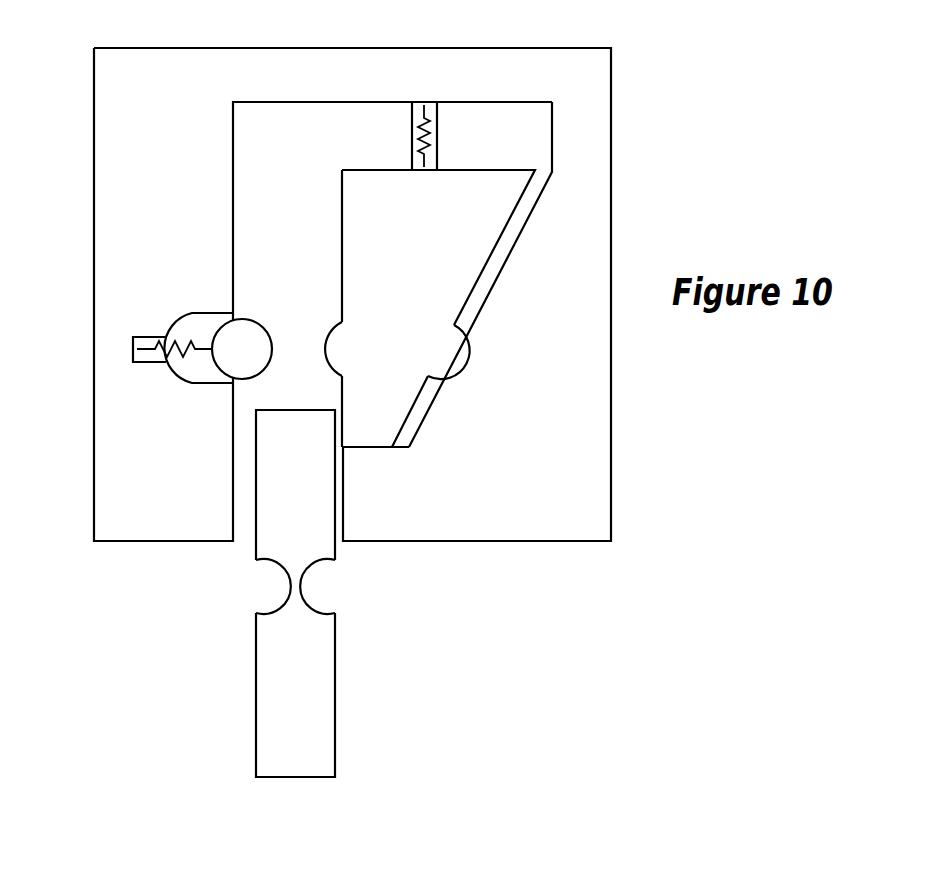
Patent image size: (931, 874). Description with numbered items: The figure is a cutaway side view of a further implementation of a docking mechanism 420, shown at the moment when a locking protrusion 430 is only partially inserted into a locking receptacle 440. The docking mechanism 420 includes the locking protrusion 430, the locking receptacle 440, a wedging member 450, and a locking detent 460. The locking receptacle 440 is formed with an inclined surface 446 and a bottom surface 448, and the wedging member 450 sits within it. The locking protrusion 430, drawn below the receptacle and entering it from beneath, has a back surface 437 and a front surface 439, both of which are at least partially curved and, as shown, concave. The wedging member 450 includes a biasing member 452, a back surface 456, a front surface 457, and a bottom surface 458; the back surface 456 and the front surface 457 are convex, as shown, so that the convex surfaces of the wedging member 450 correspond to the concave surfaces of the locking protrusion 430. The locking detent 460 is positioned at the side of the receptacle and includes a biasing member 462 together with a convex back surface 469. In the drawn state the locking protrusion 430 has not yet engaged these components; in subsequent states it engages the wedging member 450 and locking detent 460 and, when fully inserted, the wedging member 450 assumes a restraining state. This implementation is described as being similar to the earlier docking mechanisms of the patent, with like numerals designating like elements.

The docking mechanism 420 is at (95, 48).
The locking protrusion 430 is at (313, 643).
The back surface 437 is at (322, 559).
The front surface 439 is at (268, 559).
The locking receptacle 440 is at (139, 561).
The inclined surface 446 is at (556, 103).
The bottom surface 448 is at (358, 450).
The wedging member 450 is at (425, 261).
The biasing member 452 is at (440, 128).
The back surface 456 is at (553, 102).
The front surface 457 is at (325, 348).
The bottom surface 458 is at (375, 446).
The locking detent 460 is at (259, 360).
The biasing member 462 is at (146, 337).
The convex back surface 469 is at (272, 349).